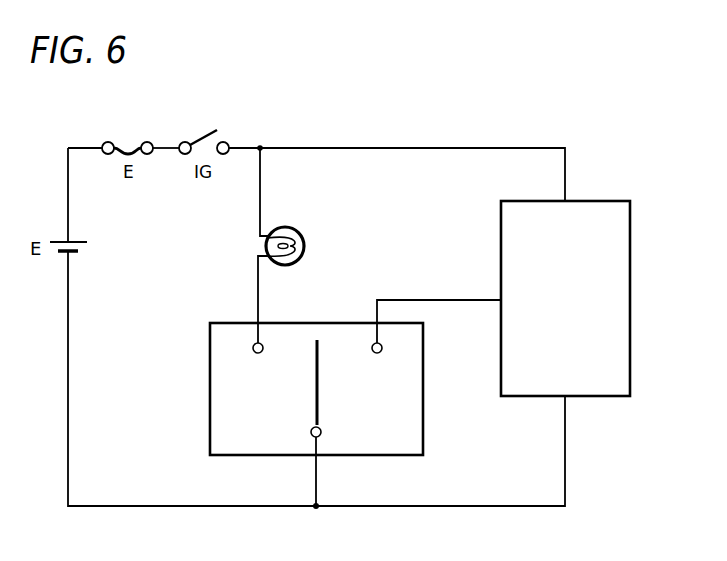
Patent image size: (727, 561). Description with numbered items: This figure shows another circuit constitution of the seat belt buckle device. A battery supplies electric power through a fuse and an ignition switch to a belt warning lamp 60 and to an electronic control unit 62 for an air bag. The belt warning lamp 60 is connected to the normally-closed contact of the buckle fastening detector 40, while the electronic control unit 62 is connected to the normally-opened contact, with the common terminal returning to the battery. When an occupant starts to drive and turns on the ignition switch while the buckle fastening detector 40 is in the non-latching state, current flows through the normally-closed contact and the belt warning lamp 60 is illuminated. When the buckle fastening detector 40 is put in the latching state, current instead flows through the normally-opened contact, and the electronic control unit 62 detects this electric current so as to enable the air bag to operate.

The buckle fastening detector 40 is at (209, 391).
The belt warning lamp 60 is at (287, 227).
The electronic control unit (ECU) for air bag 62 is at (630, 241).